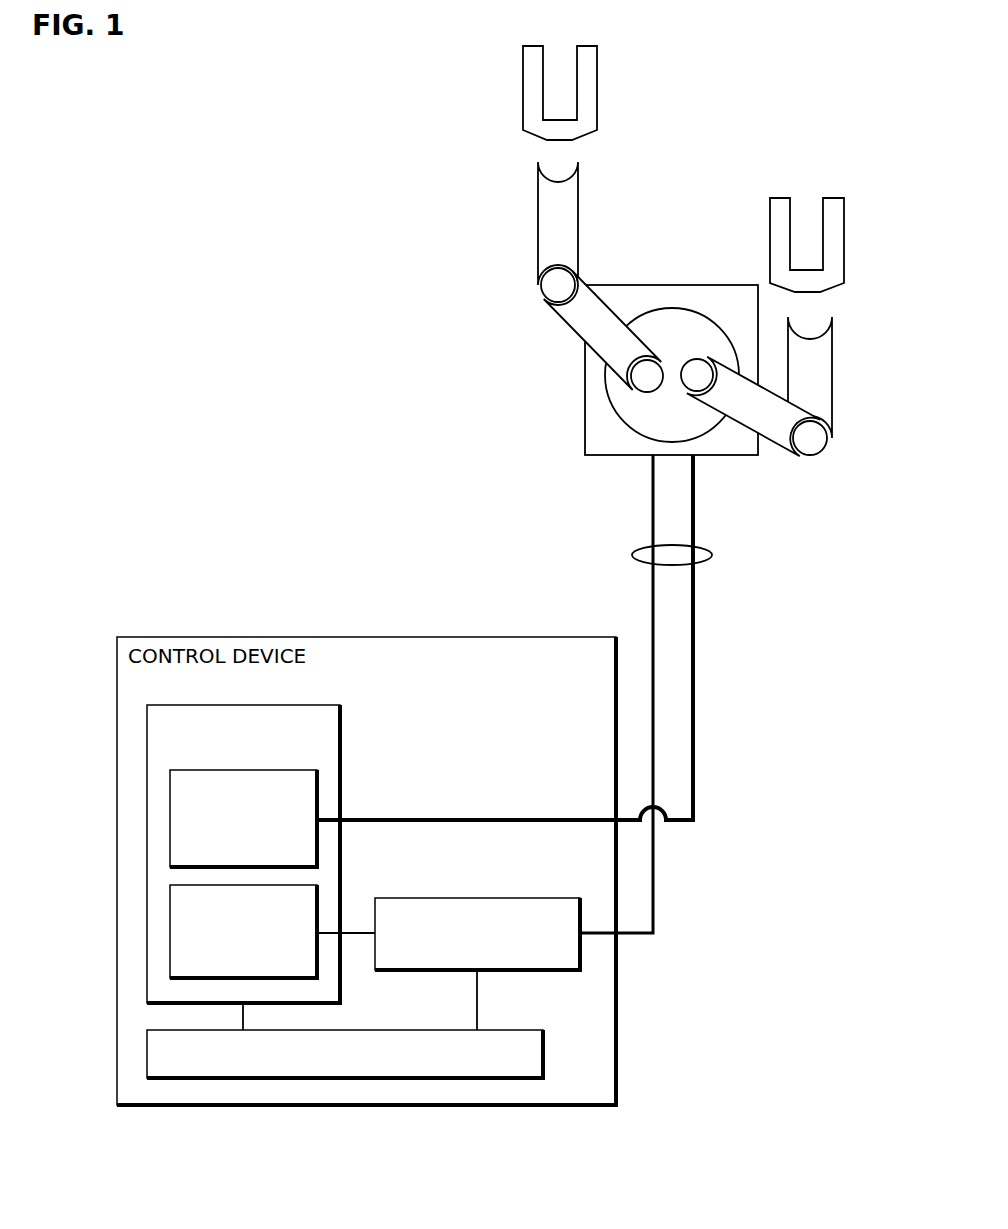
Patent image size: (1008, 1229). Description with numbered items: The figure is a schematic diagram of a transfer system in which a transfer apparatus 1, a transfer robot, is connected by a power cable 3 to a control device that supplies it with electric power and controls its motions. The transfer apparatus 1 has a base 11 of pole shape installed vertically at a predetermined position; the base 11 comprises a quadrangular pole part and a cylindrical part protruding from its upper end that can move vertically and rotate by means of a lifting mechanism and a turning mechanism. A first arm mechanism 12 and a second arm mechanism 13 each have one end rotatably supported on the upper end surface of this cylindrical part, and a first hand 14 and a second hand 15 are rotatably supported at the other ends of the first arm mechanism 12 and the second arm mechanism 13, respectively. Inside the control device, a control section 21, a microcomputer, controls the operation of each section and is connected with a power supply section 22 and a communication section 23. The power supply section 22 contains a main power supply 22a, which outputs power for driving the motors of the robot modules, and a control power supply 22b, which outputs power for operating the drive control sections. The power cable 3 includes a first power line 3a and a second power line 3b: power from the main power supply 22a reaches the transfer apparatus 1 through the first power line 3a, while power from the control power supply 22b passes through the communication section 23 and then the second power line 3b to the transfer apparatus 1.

The transfer apparatus 1 is at (493, 349).
The power cable 3 is at (713, 555).
The first power line 3a is at (697, 660).
The second power line 3b is at (650, 605).
The base 11 is at (593, 435).
The first arm mechanism 12 is at (537, 228).
The second arm mechanism 13 is at (832, 350).
The first hand 14 is at (523, 95).
The second hand 15 is at (844, 268).
The control section 21 is at (502, 1030).
The power supply section 22 is at (315, 705).
The main power supply 22a is at (170, 815).
The control power supply 22b is at (170, 930).
The communication section 23 is at (503, 898).